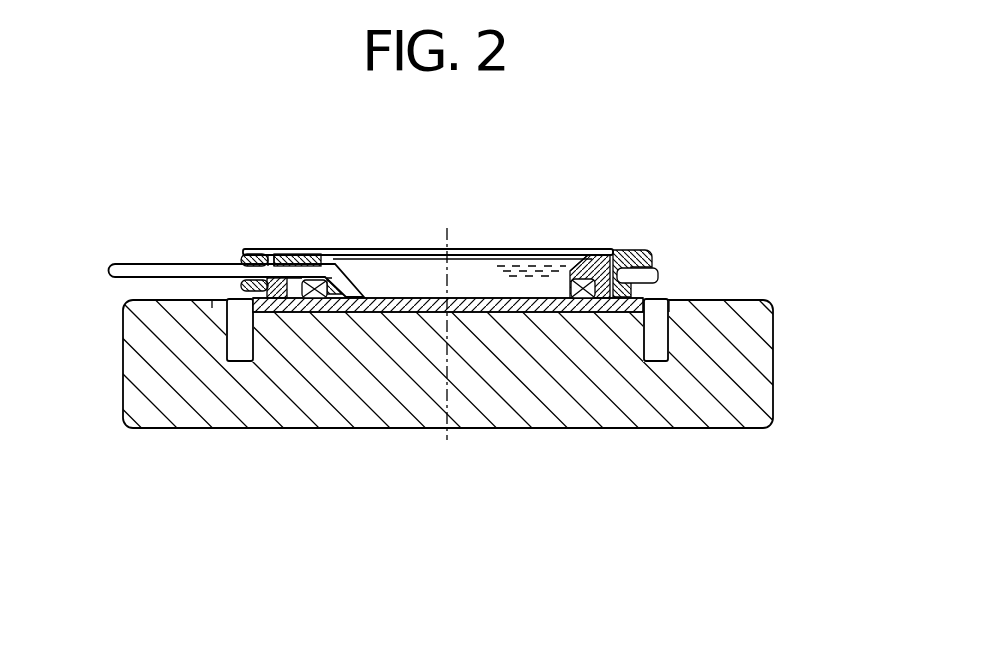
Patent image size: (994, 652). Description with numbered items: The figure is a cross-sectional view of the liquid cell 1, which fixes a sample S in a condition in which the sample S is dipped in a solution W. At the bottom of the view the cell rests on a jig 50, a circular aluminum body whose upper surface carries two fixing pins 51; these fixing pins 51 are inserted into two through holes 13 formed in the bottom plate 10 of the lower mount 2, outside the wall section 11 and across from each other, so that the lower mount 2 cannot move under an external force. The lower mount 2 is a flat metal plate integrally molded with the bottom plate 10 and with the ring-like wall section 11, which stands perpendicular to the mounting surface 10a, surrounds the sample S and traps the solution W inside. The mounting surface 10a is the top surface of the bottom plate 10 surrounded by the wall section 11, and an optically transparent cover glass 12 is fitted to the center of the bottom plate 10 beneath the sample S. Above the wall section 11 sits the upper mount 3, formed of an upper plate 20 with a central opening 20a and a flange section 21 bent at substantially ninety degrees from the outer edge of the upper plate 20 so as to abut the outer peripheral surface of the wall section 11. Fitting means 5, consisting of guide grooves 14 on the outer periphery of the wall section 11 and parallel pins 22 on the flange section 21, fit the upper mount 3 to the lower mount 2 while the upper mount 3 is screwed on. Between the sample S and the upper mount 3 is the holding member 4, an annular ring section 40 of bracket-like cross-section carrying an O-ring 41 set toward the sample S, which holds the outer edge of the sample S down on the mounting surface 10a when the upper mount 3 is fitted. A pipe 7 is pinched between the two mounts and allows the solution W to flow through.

The liquid cell 1 is at (738, 112).
The lower mount 2 is at (220, 288).
The upper mount 3 is at (255, 240).
The holding member 4 is at (310, 242).
The fitting means 5 is at (642, 201).
The pipe 7 is at (141, 264).
The bottom plate 10 is at (548, 308).
The mounting surface 10a is at (413, 298).
The wall section 11 is at (276, 253).
The cover glass 12 is at (461, 313).
The through hole 13 is at (675, 297).
The guide groove 14 is at (617, 249).
The upper plate 20 is at (607, 252).
The opening 20a is at (586, 253).
The flange section 21 is at (240, 263).
The parallel pin 22 is at (648, 267).
The annular ring section 40 is at (335, 249).
The O-ring 41 is at (313, 300).
The jig 50 is at (781, 321).
The fixing pin 51 is at (246, 352).
The solution W is at (490, 259).
The sample S is at (471, 298).